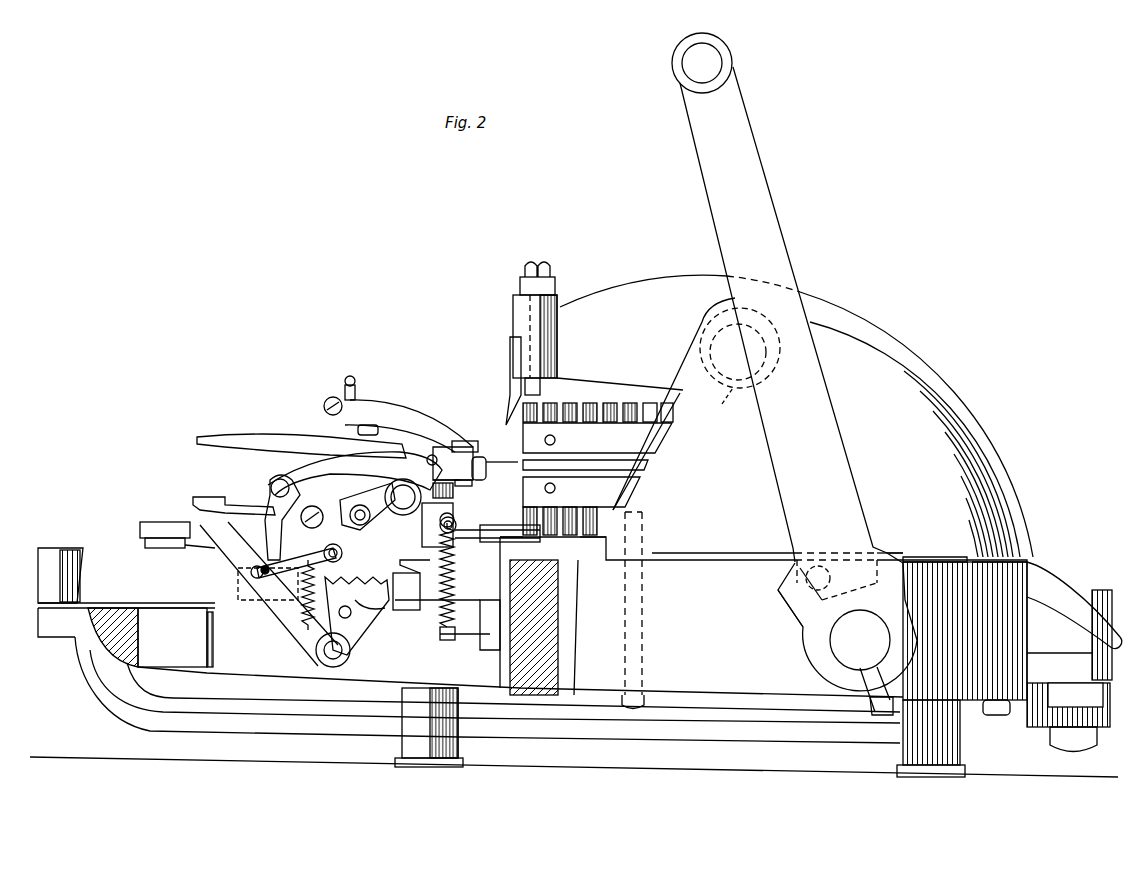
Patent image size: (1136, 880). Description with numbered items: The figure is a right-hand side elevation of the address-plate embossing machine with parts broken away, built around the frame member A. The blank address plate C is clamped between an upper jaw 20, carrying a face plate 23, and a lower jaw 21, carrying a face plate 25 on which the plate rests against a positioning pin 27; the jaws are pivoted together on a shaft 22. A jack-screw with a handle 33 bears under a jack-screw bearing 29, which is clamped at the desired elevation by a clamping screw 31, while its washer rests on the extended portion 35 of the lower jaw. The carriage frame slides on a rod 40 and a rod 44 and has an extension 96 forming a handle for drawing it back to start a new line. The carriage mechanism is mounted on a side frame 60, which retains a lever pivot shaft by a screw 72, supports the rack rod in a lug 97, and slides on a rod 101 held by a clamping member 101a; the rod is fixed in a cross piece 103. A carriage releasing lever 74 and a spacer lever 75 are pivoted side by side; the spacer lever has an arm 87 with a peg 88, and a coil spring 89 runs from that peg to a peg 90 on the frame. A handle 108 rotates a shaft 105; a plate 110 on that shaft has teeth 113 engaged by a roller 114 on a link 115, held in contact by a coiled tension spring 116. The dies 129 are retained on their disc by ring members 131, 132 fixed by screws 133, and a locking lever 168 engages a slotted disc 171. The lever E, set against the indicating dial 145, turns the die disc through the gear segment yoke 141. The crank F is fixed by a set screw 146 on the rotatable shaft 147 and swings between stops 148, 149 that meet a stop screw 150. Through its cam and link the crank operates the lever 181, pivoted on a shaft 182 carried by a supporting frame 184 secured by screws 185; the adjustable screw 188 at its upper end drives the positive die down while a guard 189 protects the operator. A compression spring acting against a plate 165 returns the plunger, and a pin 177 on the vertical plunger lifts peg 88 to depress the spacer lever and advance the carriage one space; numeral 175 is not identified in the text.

The crank F is at (778, 217).
The lever 181 is at (897, 325).
The supporting frame 184 is at (937, 437).
The shaft 182 is at (740, 366).
The frame member A is at (625, 644).
The depending lug 103 is at (540, 642).
The stop 148 is at (893, 560).
The gear segment yoke 141 is at (1045, 575).
The rotatable shaft 147 is at (847, 625).
The stop 149 is at (790, 580).
The stop screw 150 is at (805, 593).
The set screw 146 is at (872, 718).
The screws 185 is at (962, 717).
The adjustable screw 188 is at (527, 270).
The guard 189 is at (505, 393).
The positive dies 129 is at (592, 405).
The ring member 131 is at (597, 438).
The screws 133 is at (565, 490).
The ring member 132 is at (581, 506).
The locking lever 168 is at (533, 547).
The disc 171 is at (589, 547).
The extension 96 is at (255, 440).
The extended portion 35 is at (325, 460).
The jaw 20 is at (450, 432).
The jack-screw bearing 29 is at (350, 385).
The handle 33 is at (373, 426).
The shaft 22 is at (431, 455).
The face plate 23 is at (468, 460).
The jaw 21 is at (455, 480).
The face plate 25 is at (488, 478).
The positioning pin 27 is at (460, 486).
The clamping screw 31 is at (444, 493).
The address plate C is at (512, 460).
The rod 40 is at (403, 497).
The peg 88 is at (423, 525).
The lug 97 is at (367, 506).
The rod 44 is at (272, 487).
The side frame 60 is at (300, 514).
The screw 72 is at (329, 544).
The carriage releasing lever 74 is at (235, 498).
The spacer lever 75 is at (190, 558).
The indicating dial 145 is at (127, 603).
The lever E is at (122, 712).
The handle 108 is at (241, 561).
The rod 101 is at (248, 589).
The clamping member 101a is at (258, 622).
The coiled tension spring 116 is at (302, 600).
The roller 114 is at (342, 554).
The link 115 is at (280, 565).
The arm 87 is at (411, 565).
The plate 110 is at (357, 625).
The teeth 113 is at (358, 603).
The shaft 105 is at (350, 655).
The coil spring 89 is at (440, 625).
The peg 90 is at (458, 640).
The plate 165 is at (495, 652).
The screw 175 is at (463, 517).
The pin 177 is at (490, 530).